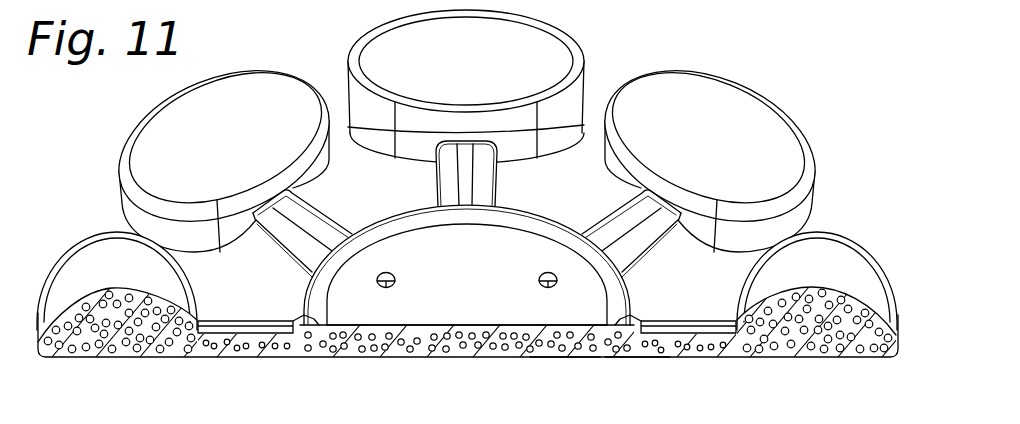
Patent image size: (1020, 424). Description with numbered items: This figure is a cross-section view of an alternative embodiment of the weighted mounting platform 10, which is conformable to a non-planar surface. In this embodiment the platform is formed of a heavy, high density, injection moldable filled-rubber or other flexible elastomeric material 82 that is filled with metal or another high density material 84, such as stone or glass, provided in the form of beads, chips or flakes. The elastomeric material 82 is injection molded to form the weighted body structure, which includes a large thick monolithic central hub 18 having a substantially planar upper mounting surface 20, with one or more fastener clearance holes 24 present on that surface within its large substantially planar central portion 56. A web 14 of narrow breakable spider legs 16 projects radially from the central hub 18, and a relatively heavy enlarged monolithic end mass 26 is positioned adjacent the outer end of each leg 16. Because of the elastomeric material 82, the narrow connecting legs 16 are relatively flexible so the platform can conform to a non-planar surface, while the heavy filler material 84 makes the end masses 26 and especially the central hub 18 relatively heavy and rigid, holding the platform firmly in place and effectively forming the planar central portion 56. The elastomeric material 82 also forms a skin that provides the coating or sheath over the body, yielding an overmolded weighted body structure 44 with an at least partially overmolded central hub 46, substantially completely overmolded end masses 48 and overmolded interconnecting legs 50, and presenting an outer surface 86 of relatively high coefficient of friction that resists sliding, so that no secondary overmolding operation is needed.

The weighted mounting platform 10 is at (90, 200).
The web 14 is at (613, 211).
The breakable spider legs 16 is at (257, 348).
The central hub 18 is at (431, 238).
The upper mounting surface 20 is at (548, 257).
The fastener clearance holes 24 is at (378, 285).
The monolithic end masses 26 is at (93, 344).
The overmolded weighted body structure 44 is at (778, 87).
The overmolded central hub 46 is at (391, 216).
The overmolded end masses 48 is at (467, 170).
The overmolded interconnecting legs 50 is at (336, 220).
The planar central portion 56 is at (479, 301).
The elastomeric material 82 is at (555, 349).
The high density material 84 is at (495, 346).
The outer surface 86 is at (623, 358).